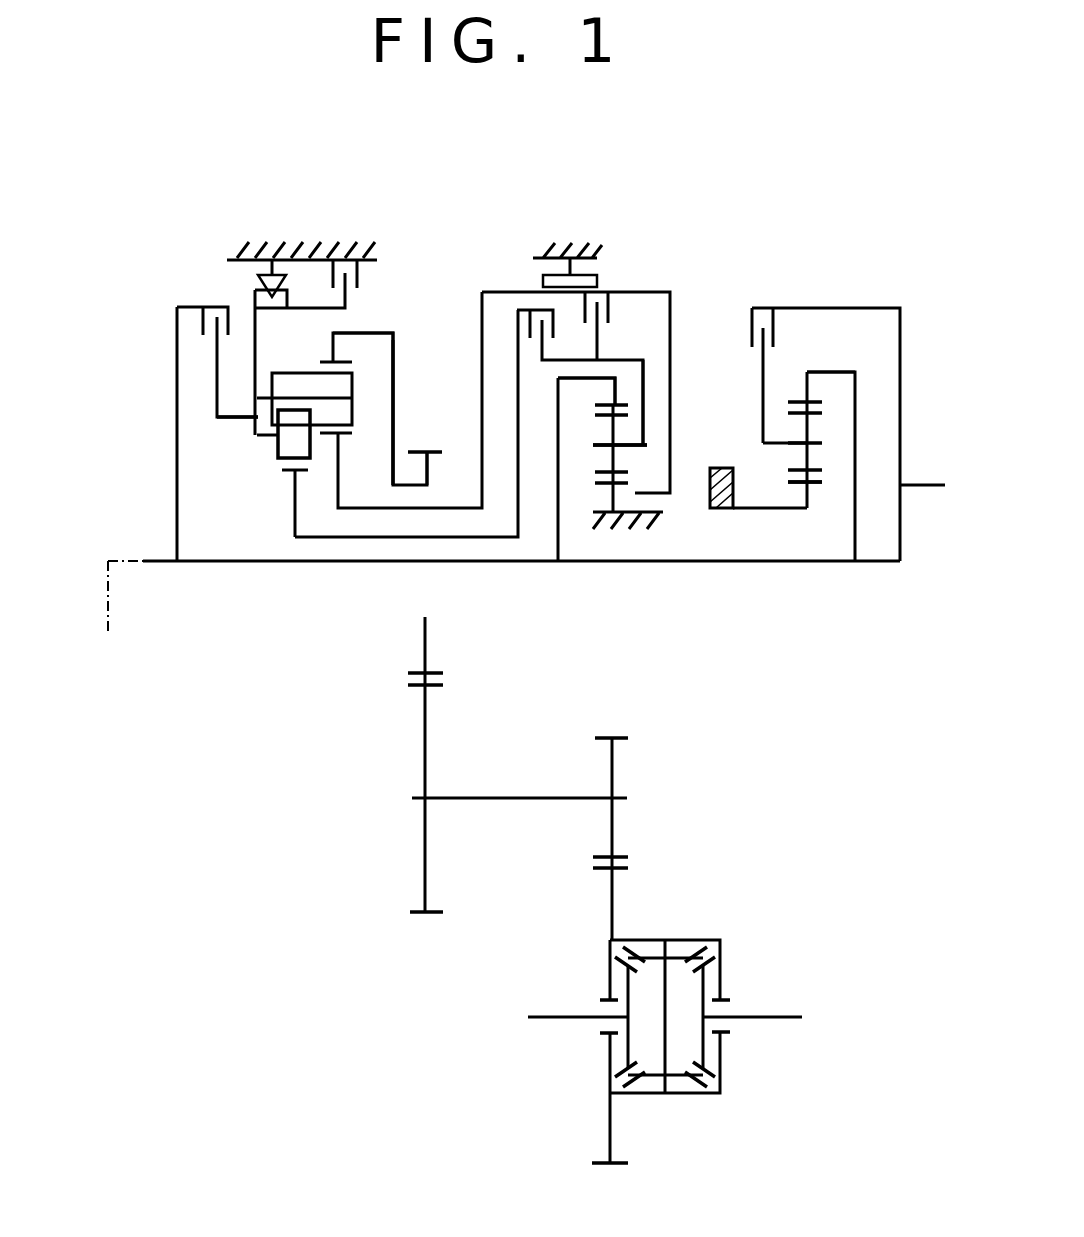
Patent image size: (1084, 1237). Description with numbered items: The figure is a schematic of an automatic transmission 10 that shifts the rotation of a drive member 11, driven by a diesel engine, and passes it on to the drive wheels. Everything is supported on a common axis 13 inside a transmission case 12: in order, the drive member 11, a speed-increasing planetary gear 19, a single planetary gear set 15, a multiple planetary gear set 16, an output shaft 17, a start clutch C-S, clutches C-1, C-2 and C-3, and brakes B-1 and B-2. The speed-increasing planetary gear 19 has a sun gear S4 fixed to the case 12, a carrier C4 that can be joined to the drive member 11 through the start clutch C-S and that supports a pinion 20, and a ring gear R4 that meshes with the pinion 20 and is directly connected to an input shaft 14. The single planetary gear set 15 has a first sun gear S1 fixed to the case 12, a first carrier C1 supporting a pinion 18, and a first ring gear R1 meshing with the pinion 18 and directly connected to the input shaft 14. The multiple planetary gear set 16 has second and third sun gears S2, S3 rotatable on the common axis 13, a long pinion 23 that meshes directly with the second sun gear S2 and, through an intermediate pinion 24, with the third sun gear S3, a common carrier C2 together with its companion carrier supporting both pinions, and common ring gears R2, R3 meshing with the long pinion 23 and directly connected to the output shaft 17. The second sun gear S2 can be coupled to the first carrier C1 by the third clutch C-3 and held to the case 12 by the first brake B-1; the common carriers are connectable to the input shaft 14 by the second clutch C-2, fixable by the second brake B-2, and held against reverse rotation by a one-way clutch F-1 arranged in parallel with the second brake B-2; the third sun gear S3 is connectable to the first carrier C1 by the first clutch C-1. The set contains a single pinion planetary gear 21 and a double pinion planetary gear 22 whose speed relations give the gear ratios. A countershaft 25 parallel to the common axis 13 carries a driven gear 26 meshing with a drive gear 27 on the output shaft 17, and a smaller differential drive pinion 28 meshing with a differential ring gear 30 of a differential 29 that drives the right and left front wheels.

The automatic transmission 10 is at (451, 268).
The drive member 11 is at (901, 410).
The transmission case 12 is at (307, 245).
The common axis 13 is at (116, 615).
The input shaft 14 is at (720, 562).
The single planetary gear set 15 is at (620, 542).
The multiple planetary gear set 16 is at (317, 522).
The output shaft 17 is at (393, 378).
The pinion 18 is at (620, 417).
The speed-increasing planetary gear 19 is at (795, 535).
The pinion 20 is at (805, 455).
The single pinion planetary gear 21 is at (364, 428).
The double pinion planetary gear 22 is at (272, 470).
The long pinion 23 is at (295, 385).
The intermediate pinion 24 is at (295, 447).
The countershaft 25 is at (522, 793).
The driven gear 26 is at (413, 912).
The drive gear 27 is at (441, 673).
The differential drive pinion 28 is at (620, 740).
The differential 29 is at (700, 940).
The differential ring gear 30 is at (620, 868).
The one-way clutch F-1 is at (294, 316).
The first brake B-1 is at (571, 247).
The second brake B-2 is at (360, 242).
The first clutch C-1 is at (540, 312).
The second clutch C-2 is at (217, 343).
The third clutch C-3 is at (625, 326).
The start clutch C-S is at (750, 332).
The first sun gear S1 is at (621, 490).
The second sun gear S2 is at (343, 437).
The third sun gear S3 is at (287, 475).
The sun gear S4 is at (817, 485).
The first ring gear R1 is at (625, 403).
The common ring gear R2 is at (348, 362).
The common ring gear R3 is at (363, 409).
The ring gear R4 is at (795, 402).
The first carrier C1 is at (630, 415).
The common carrier C2 is at (232, 427).
The carrier C4 is at (760, 417).